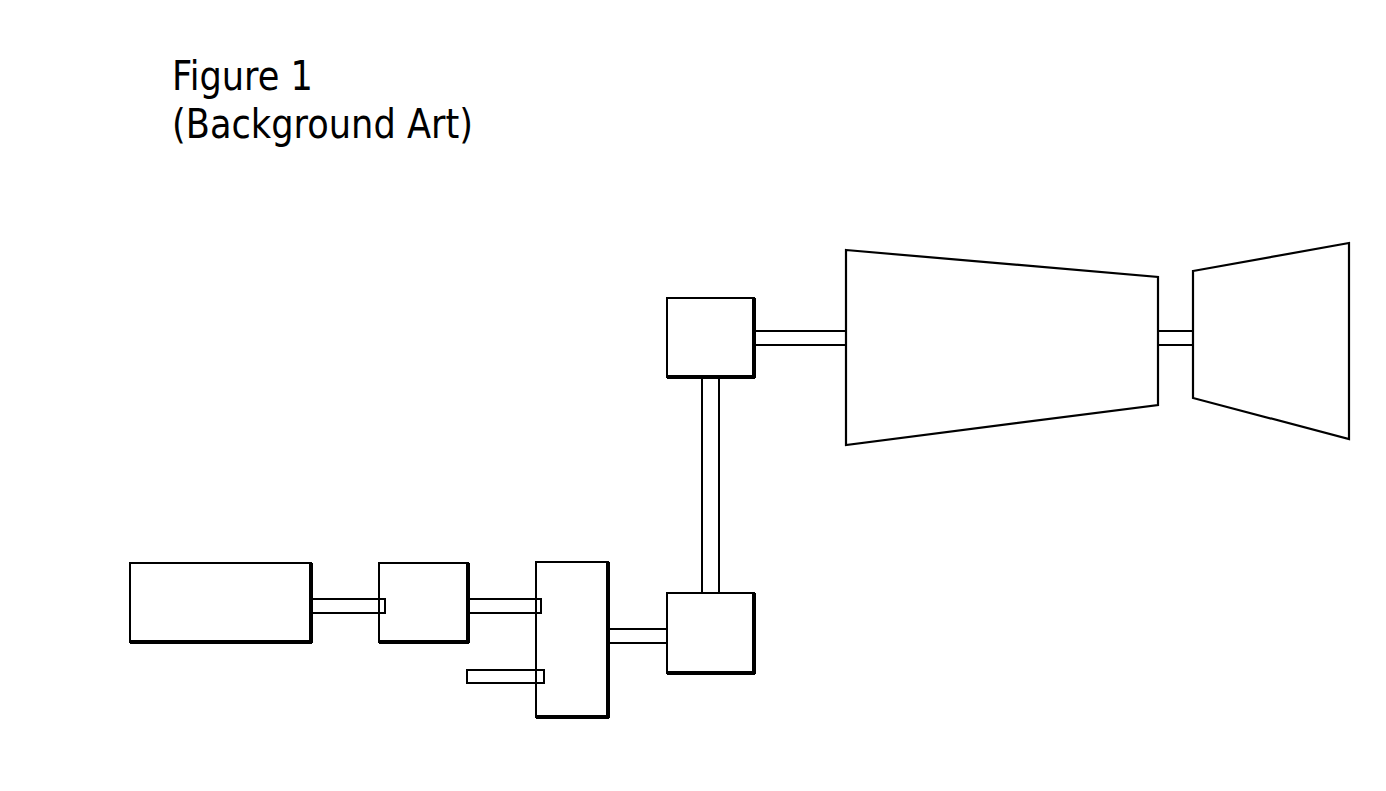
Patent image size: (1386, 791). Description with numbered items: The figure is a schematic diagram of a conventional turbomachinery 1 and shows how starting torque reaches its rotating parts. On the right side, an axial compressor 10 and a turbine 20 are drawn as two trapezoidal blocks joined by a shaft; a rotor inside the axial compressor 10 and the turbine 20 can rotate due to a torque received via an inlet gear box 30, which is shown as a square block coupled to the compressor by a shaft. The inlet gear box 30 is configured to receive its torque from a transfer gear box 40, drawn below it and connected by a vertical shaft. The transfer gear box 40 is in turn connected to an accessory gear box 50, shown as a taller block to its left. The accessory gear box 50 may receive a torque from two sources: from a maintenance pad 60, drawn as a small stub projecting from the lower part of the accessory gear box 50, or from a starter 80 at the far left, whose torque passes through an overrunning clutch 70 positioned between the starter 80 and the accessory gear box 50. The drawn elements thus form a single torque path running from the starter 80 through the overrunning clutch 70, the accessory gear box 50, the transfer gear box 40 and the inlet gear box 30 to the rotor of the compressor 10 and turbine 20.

The turbomachinery 1 is at (636, 173).
The axial compressor 10 is at (984, 260).
The turbine 20 is at (1282, 253).
The inlet gear box 30 is at (683, 378).
The transfer gear box 40 is at (746, 592).
The accessory gear box 50 is at (560, 562).
The maintenance pad 60 is at (481, 684).
The overrunning clutch 70 is at (465, 562).
The starter 80 is at (217, 562).